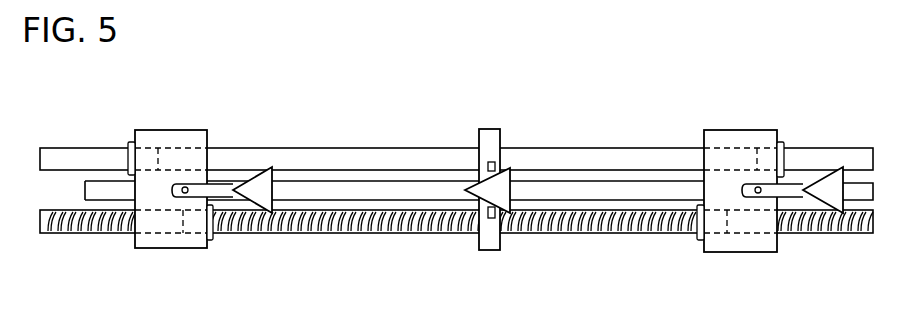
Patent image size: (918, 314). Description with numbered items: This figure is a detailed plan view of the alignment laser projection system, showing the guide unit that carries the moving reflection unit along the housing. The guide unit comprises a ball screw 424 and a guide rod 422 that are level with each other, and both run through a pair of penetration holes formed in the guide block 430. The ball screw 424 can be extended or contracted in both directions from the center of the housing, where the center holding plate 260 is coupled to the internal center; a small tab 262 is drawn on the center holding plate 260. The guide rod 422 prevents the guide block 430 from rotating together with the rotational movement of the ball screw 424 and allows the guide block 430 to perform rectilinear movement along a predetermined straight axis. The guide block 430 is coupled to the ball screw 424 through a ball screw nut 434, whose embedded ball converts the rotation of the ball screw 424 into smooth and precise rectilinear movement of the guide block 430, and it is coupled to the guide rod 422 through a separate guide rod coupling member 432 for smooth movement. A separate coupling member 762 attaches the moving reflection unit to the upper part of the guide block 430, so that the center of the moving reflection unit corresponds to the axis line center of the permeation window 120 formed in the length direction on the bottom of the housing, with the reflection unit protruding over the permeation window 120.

The permeation window 120 is at (326, 186).
The center holding plate 260 is at (497, 135).
The guide block tab 262 is at (493, 170).
The guide rod 422 is at (50, 172).
The ball screw 424 is at (100, 234).
The guide block 430 is at (171, 130).
The guide rod coupling member 432 is at (128, 148).
The ball screw nut 434 is at (213, 222).
The coupling member 762 is at (216, 187).